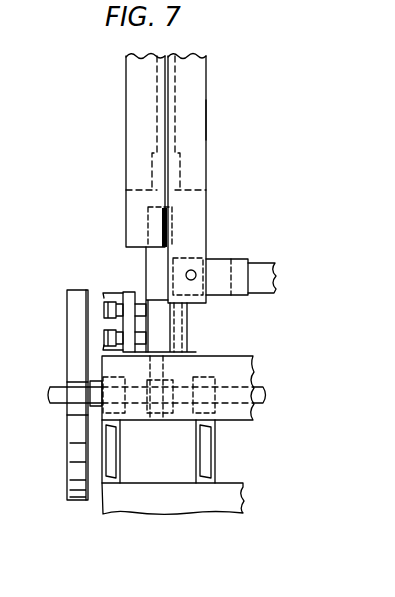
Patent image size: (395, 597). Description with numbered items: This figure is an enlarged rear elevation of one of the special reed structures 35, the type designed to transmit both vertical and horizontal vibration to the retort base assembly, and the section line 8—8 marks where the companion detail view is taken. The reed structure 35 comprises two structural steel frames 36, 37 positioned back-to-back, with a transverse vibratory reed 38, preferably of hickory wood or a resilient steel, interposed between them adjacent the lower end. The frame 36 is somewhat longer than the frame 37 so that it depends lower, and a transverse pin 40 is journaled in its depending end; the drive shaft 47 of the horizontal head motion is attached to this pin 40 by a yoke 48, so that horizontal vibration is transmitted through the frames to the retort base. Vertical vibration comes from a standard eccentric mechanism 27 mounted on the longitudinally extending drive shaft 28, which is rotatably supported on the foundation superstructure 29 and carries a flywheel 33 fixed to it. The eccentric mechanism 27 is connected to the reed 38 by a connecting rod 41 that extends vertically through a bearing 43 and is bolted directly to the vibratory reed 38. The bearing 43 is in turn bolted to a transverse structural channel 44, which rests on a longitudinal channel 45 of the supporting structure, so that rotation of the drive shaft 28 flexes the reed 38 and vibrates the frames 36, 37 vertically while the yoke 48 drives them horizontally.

The section line 8— 8 is at (235, 32).
The eccentric mechanism 27 is at (148, 398).
The drive shaft 28 is at (265, 391).
The foundation superstructure 29 is at (223, 493).
The flywheel 33 is at (77, 455).
The reed structure 35 is at (209, 121).
The frame 36 is at (136, 130).
The frame 37 is at (192, 148).
The vibratory reed 38 is at (163, 217).
The transverse pin 40 is at (193, 270).
The connecting rod 41 is at (153, 264).
The bearing 43 is at (156, 323).
The transverse structural channel 44 is at (118, 293).
The longitudinal channel 45 is at (233, 368).
The drive shaft 47 is at (268, 270).
The yoke 48 is at (225, 265).